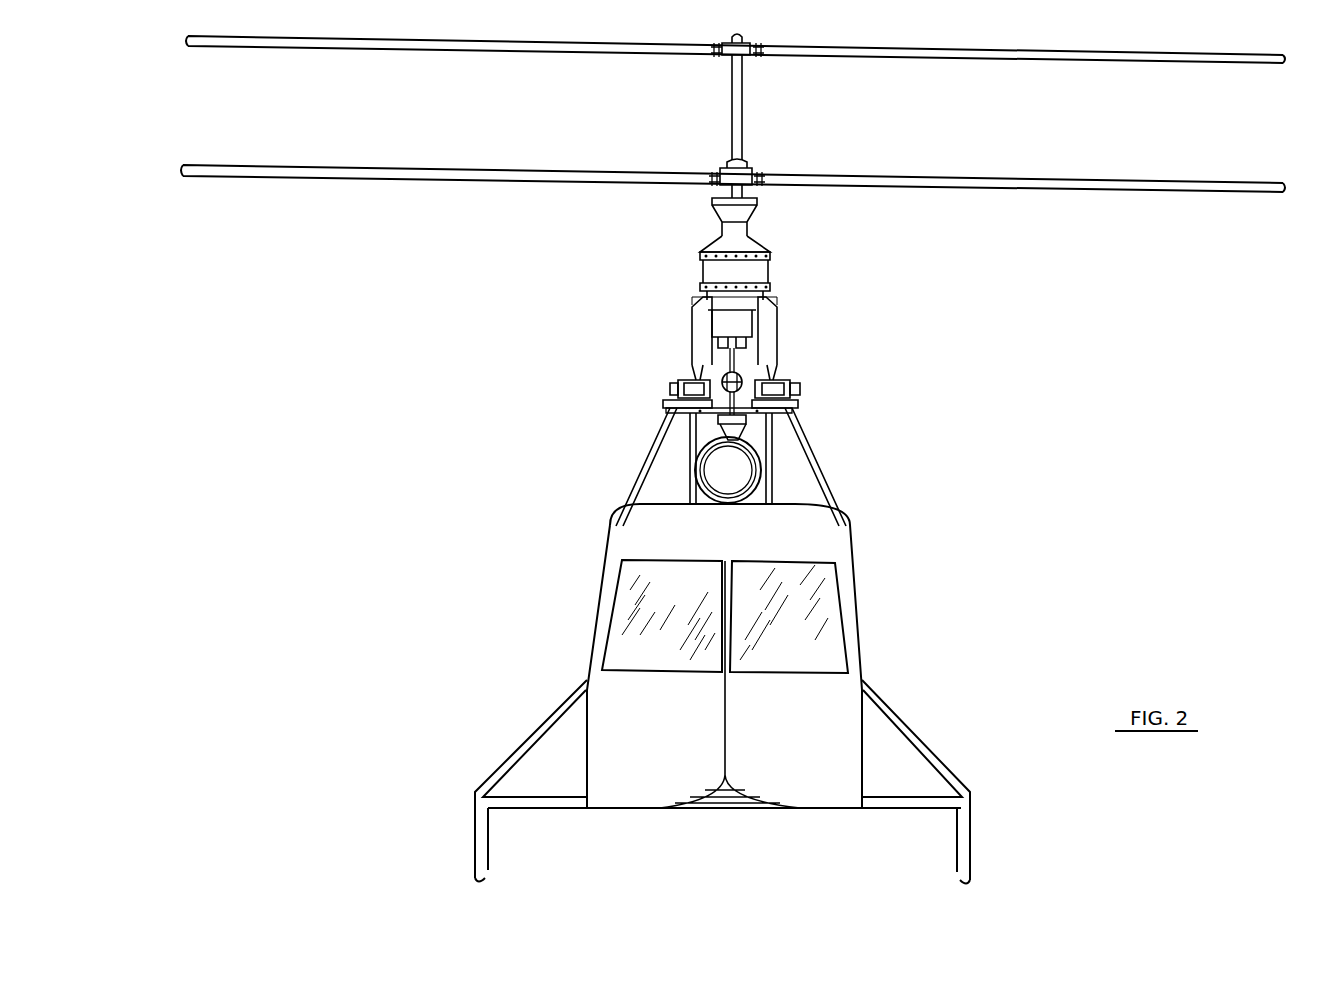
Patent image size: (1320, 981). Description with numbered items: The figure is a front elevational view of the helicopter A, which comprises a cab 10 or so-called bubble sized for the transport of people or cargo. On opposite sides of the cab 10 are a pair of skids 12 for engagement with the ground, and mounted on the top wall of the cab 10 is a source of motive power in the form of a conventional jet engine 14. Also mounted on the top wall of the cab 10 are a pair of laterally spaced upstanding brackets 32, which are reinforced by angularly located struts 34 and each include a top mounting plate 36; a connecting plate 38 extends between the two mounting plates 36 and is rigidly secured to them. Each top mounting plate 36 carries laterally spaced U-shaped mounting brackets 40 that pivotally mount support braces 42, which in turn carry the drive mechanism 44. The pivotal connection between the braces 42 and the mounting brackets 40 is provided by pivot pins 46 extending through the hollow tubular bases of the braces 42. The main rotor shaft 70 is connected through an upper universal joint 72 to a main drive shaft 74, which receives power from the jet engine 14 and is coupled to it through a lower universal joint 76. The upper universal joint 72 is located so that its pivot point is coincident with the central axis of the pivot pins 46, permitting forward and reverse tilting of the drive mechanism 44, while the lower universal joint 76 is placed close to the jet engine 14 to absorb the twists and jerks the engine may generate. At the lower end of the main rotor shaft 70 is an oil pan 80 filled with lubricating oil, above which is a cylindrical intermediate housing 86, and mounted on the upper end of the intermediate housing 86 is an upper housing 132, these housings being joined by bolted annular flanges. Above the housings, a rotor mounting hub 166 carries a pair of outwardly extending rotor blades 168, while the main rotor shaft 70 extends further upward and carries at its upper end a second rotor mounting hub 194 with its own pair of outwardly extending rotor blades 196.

The cab 10 is at (859, 658).
The skids 12 is at (484, 880).
The jet engine 14 is at (735, 498).
The upstanding brackets 32 is at (691, 456).
The struts 34 is at (631, 497).
The top mounting plate 36 is at (678, 395).
The connecting plate 38 is at (753, 414).
The U-shaped mounting brackets 40 is at (782, 370).
The support braces 42 is at (775, 333).
The drive mechanism 44 is at (783, 270).
The pivot pins 46 is at (800, 387).
The main rotor shaft 70 is at (737, 128).
The upper universal joint 72 is at (722, 385).
The main drive shaft 74 is at (716, 417).
The lower universal joint 76 is at (737, 432).
The oil pan 80 is at (718, 322).
The intermediate housing 86 is at (712, 270).
The upper housing 132 is at (712, 246).
The rotor mounting hub 166 is at (743, 185).
The rotor blades 168 is at (978, 181).
The rotor mounting hub 194 is at (736, 44).
The rotor blades 196 is at (737, 52).
The helicopter A is at (575, 603).